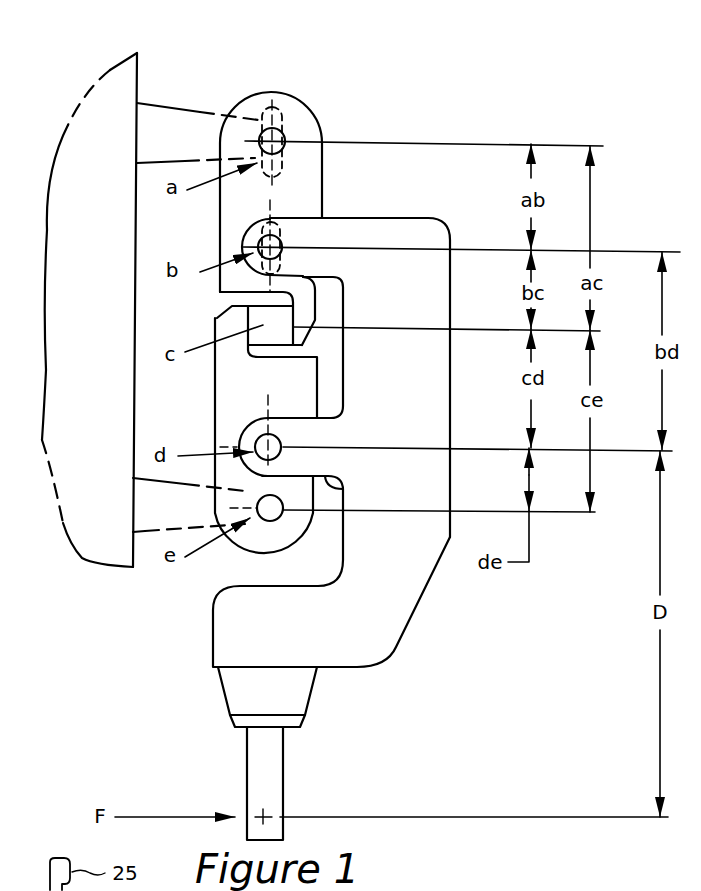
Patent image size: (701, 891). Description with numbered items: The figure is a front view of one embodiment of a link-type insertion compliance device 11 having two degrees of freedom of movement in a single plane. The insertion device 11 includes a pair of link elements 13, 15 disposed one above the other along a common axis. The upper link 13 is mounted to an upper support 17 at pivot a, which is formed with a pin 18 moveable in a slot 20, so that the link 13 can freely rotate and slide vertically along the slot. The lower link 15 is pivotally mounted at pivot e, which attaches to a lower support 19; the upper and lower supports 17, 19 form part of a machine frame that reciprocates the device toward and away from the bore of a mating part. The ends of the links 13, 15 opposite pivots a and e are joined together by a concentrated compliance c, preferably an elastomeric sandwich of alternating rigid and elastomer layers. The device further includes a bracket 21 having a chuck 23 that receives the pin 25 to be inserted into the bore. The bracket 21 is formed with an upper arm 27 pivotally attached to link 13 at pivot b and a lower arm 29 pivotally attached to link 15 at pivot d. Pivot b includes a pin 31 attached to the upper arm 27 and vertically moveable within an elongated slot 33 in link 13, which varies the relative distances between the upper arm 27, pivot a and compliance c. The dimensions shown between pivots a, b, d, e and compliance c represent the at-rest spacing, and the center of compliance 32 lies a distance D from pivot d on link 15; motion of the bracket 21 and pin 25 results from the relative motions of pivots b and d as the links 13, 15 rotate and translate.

The insertion compliance device 11 is at (362, 47).
The link element 13 is at (240, 107).
The link element 15 is at (207, 412).
The upper support 17 is at (165, 102).
The pin 18 is at (284, 133).
The lower support 19 is at (147, 533).
The slot 20 is at (270, 105).
The bracket 21 is at (410, 624).
The chuck 23 is at (316, 692).
The pin 25 is at (285, 748).
The upper arm 27 is at (316, 296).
The lower arm 29 is at (343, 490).
The pin 31 is at (283, 242).
The center of compliance 32 is at (263, 815).
The elongated slot 33 is at (273, 218).